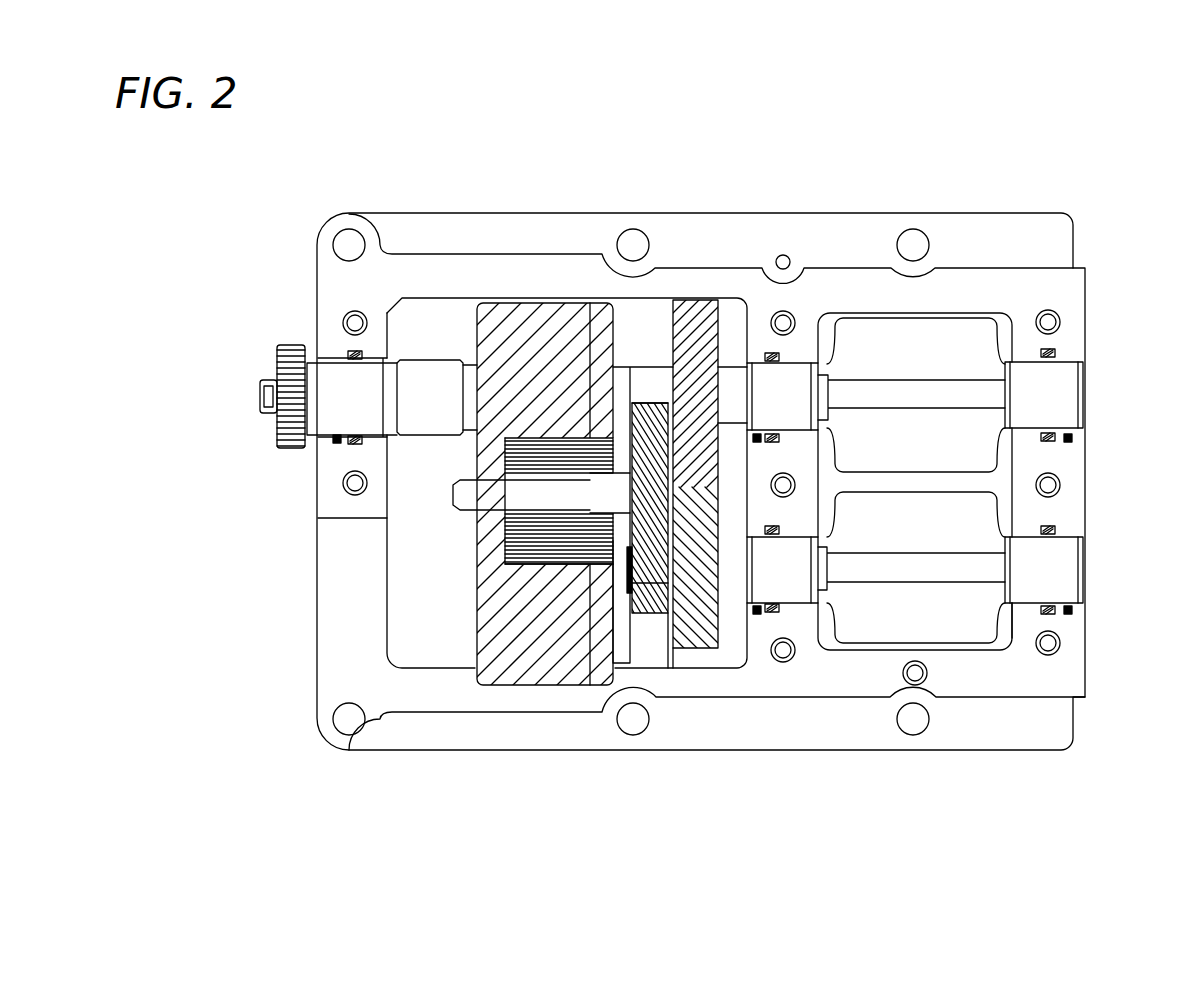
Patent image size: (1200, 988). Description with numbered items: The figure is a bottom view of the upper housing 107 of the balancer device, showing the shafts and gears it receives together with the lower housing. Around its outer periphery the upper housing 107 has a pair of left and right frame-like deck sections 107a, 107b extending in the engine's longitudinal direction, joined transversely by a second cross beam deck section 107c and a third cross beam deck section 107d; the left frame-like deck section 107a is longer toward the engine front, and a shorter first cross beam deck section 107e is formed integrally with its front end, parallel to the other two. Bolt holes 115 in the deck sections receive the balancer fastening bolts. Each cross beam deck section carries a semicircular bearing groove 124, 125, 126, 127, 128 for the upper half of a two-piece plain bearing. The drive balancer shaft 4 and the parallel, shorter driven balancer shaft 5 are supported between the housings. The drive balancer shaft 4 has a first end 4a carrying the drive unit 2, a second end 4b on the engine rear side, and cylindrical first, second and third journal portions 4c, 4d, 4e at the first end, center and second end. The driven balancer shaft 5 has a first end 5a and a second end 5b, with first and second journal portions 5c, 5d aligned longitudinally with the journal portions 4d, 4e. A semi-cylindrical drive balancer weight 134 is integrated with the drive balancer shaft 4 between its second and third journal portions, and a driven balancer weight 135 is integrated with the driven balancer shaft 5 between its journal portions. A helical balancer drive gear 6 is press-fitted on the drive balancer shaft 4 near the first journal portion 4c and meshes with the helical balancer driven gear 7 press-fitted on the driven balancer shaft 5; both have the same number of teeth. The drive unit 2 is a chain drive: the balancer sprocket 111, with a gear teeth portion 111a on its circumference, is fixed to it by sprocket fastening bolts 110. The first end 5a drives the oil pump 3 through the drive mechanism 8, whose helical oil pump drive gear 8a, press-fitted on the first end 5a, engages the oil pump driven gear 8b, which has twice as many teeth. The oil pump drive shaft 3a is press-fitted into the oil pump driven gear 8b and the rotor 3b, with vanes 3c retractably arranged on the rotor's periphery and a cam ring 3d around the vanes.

The drive unit 2 is at (309, 365).
The oil pump 3 is at (466, 644).
The oil pump drive shaft 3a is at (462, 495).
The rotor 3b is at (504, 518).
The vanes 3c is at (506, 468).
The cam ring 3d is at (512, 553).
The drive balancer shaft 4 is at (1095, 392).
The first end 4a is at (316, 422).
The second end 4b is at (1085, 375).
The first journal portion 4c is at (343, 368).
The second journal portion 4d is at (806, 377).
The third journal portion 4e is at (1060, 370).
The driven balancer shaft 5 is at (1095, 557).
The first end 5a is at (620, 570).
The second end 5b is at (1085, 583).
The first journal portion 5c is at (800, 590).
The second journal portion 5d is at (1052, 590).
The balancer drive gear 6 is at (703, 300).
The balancer driven gear 7 is at (703, 650).
The drive mechanism 8 is at (640, 580).
The oil pump drive gear 8a is at (645, 625).
The oil pump driven gear 8b is at (645, 400).
The upper housing 107 is at (1043, 209).
The left frame-like deck section 107a is at (850, 290).
The right frame-like deck section 107b is at (845, 697).
The second cross beam deck section 107c is at (747, 630).
The third cross beam deck section 107d is at (1085, 470).
The first cross beam deck section 107e is at (318, 505).
The sprocket fastening bolts 110 is at (268, 392).
The balancer sprocket 111 is at (272, 428).
The gear teeth portion 111a is at (283, 450).
The bolt holes 115 is at (352, 240).
The semicircular bearing groove 124 is at (364, 372).
The semicircular bearing groove 125 is at (768, 372).
The semicircular bearing groove 126 is at (1028, 370).
The semicircular bearing groove 127 is at (770, 590).
The semicircular bearing groove 128 is at (1030, 590).
The drive balancer weight 134 is at (960, 337).
The driven balancer weight 135 is at (967, 627).